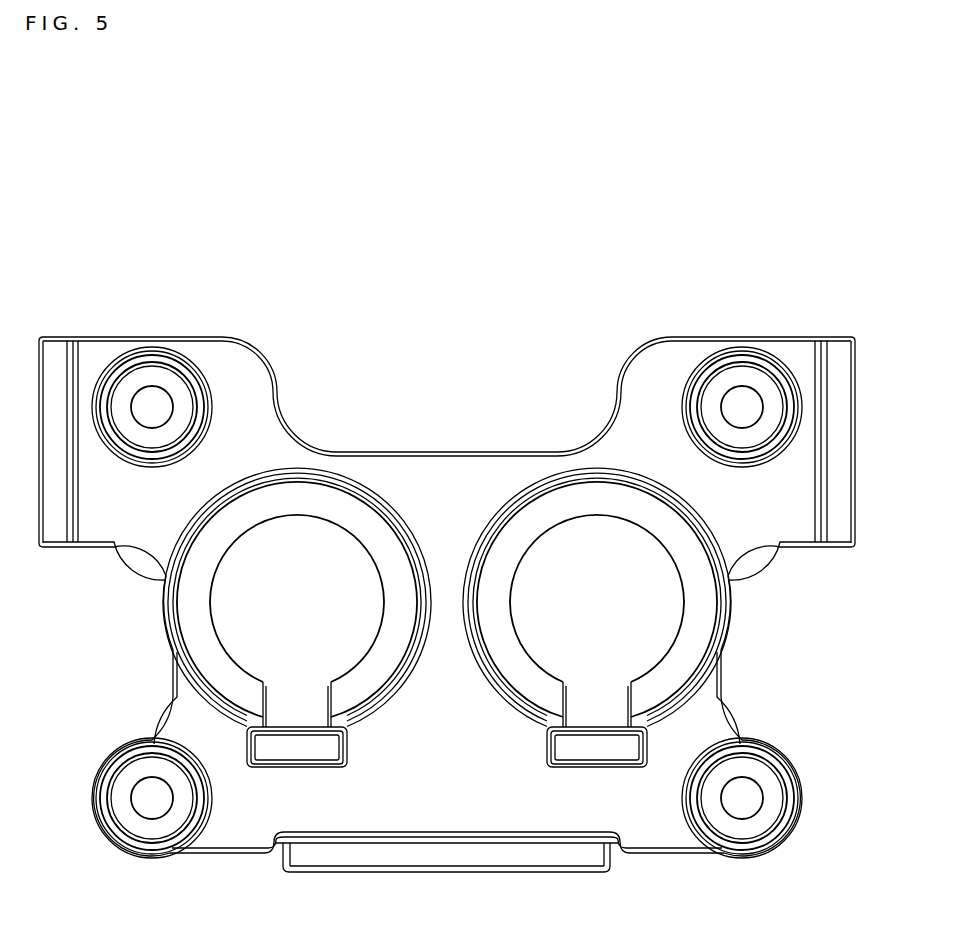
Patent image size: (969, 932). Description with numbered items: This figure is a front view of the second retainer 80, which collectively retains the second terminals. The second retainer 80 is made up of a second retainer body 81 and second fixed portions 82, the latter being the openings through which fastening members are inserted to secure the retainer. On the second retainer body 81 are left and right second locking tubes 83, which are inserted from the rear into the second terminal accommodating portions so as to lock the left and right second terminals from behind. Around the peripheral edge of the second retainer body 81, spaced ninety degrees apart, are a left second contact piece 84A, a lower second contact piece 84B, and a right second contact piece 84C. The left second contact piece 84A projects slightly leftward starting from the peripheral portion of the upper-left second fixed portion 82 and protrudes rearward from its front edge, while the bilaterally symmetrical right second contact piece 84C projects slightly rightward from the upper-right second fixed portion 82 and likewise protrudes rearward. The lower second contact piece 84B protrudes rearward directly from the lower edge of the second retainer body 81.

The second retainer 80 is at (441, 249).
The second retainer body 81 is at (449, 478).
The second fixed portions 82 is at (153, 378).
The second locking tubes 83 is at (308, 500).
The left second contact piece 84A is at (837, 520).
The lower second contact piece 84B is at (437, 855).
The right second contact piece 84C is at (53, 525).